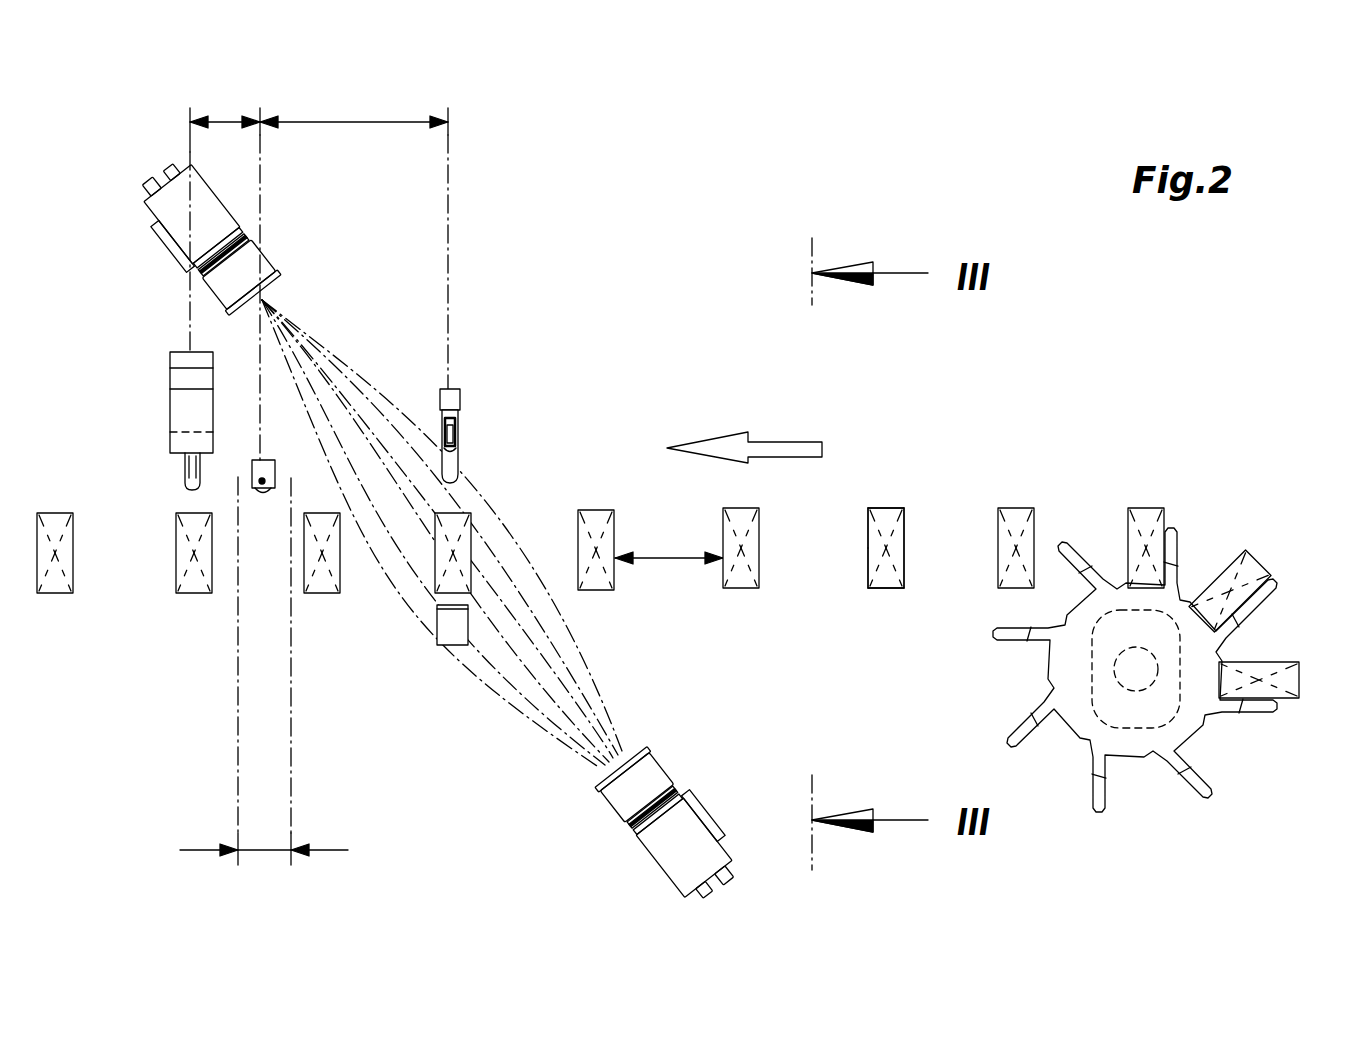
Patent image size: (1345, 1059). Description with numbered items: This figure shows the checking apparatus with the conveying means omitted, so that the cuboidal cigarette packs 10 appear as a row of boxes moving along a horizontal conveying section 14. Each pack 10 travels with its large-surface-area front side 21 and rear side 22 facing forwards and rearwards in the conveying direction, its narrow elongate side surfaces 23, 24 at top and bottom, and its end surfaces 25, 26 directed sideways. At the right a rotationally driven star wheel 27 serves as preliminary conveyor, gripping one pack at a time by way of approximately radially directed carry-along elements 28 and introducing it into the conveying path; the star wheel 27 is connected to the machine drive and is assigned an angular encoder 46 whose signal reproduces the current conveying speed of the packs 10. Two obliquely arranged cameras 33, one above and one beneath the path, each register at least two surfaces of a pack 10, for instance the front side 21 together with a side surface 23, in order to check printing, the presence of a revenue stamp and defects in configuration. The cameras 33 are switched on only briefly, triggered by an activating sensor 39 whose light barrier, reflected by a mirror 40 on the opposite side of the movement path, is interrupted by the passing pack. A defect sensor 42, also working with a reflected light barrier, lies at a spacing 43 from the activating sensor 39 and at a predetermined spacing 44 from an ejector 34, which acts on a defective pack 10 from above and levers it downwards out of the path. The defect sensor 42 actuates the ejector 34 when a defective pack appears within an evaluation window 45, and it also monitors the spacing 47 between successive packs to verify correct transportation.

The pack 10 is at (908, 463).
The conveying section 14 is at (607, 323).
The front side 21 is at (868, 573).
The rear side 22 is at (903, 550).
The side surface 23 is at (887, 507).
The side surface 24 is at (887, 590).
The end surface 25 is at (819, 623).
The end surface 26 is at (868, 517).
The star wheel 27 is at (1142, 780).
The rotor arm 28 is at (1258, 705).
The camera 33 is at (163, 204).
The ejector 34 is at (182, 415).
The activating sensor 39 is at (462, 418).
The mirror 40 is at (438, 640).
The defect sensor 42 is at (270, 474).
The spacing 43 is at (357, 120).
The spacing 44 is at (226, 120).
The evaluation window 45 is at (263, 852).
The angular encoder 46 is at (1090, 718).
The spacing 47 is at (670, 563).